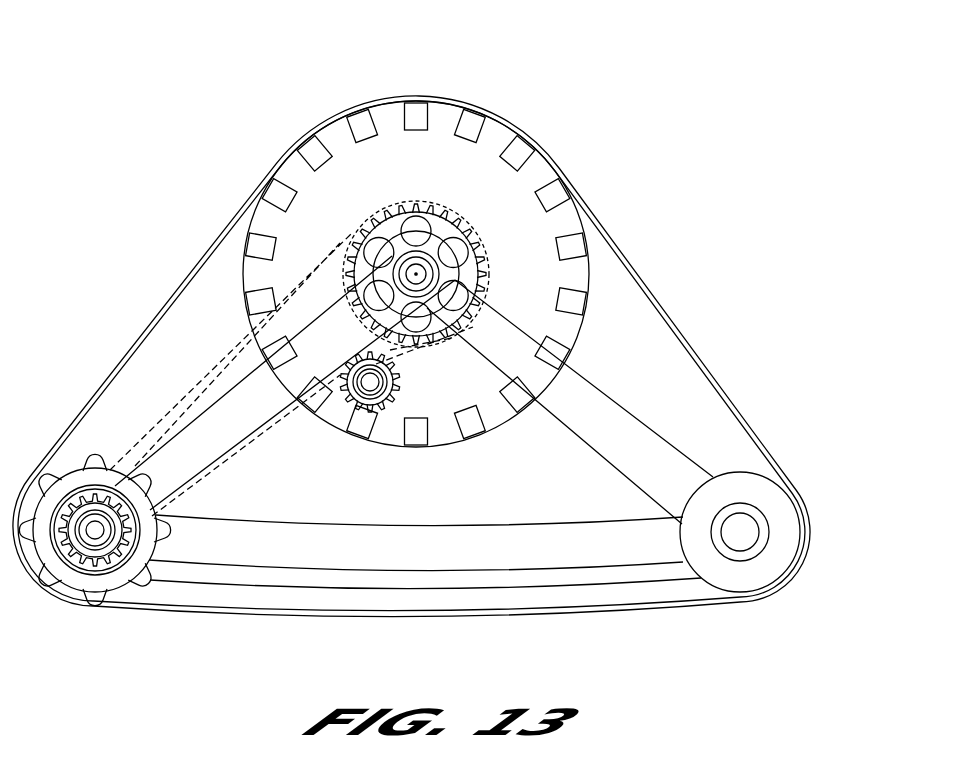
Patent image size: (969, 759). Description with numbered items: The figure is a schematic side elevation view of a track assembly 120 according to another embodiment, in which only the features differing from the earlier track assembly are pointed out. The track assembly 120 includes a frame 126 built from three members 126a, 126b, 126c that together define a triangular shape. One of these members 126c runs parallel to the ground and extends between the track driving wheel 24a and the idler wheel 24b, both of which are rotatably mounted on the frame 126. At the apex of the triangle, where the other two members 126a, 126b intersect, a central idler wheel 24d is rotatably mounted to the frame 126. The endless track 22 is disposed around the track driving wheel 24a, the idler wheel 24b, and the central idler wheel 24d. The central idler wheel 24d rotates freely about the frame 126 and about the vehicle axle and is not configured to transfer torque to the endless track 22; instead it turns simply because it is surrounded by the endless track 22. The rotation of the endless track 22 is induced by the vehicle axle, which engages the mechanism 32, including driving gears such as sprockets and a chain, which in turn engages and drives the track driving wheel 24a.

The track assembly 120 is at (698, 150).
The endless track 22 is at (663, 305).
The central idler wheel 24d is at (508, 193).
The mechanism 32 is at (215, 342).
The frame 126 is at (466, 464).
The member 126a is at (680, 473).
The member 126b is at (217, 437).
The member 126c is at (625, 545).
The track driving wheel 24a is at (97, 578).
The idler wheel 24b is at (775, 560).